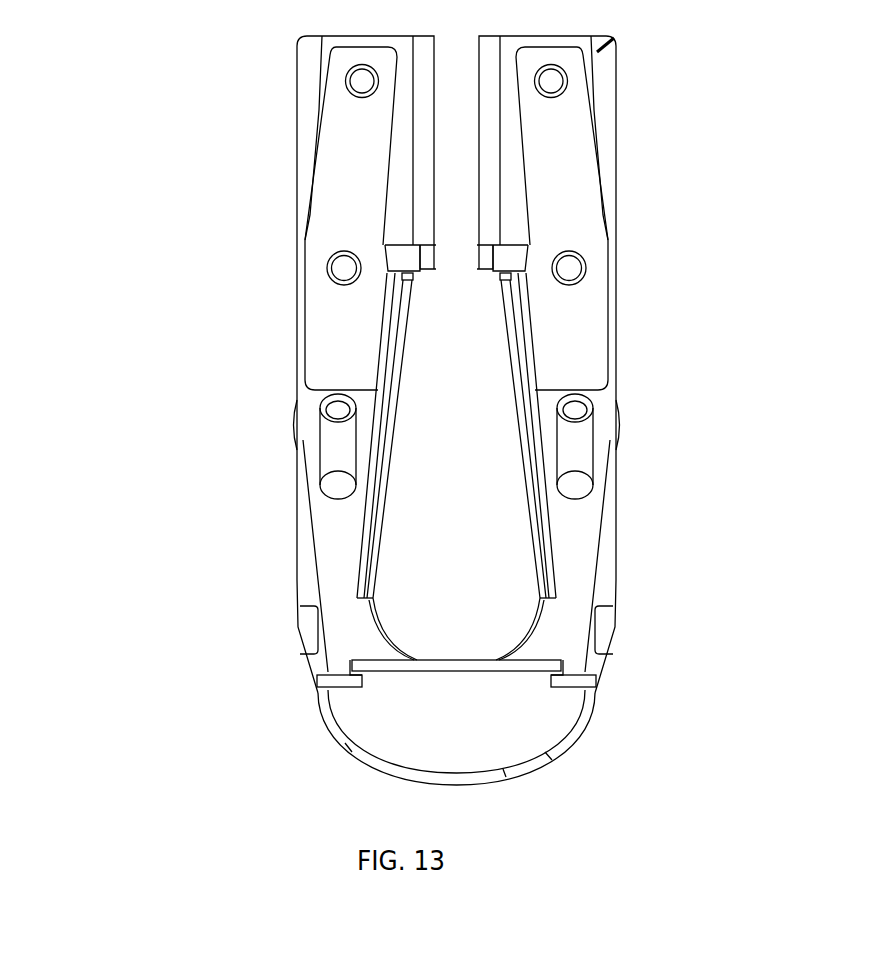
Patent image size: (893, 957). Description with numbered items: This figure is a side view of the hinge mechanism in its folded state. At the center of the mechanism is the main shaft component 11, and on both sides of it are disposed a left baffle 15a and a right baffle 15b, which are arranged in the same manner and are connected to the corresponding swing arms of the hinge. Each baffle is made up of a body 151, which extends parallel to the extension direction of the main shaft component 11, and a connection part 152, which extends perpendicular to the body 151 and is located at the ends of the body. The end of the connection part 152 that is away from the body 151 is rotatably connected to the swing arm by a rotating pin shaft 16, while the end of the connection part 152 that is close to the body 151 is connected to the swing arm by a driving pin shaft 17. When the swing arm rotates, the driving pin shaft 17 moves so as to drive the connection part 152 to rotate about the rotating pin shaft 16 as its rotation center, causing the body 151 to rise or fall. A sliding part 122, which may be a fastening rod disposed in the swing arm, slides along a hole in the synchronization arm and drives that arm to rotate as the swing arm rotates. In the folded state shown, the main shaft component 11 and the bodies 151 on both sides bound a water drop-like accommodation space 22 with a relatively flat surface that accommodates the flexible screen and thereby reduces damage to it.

The main shaft component 11 is at (390, 747).
The sliding part 122 is at (590, 407).
The left baffle 15a is at (227, 322).
The right baffle 15b is at (627, 322).
The body 151 is at (395, 341).
The connection part 152 is at (255, 218).
The rotating pin shaft 16 is at (355, 88).
The driving pin shaft 17 is at (570, 268).
The accommodation space 22 is at (503, 610).